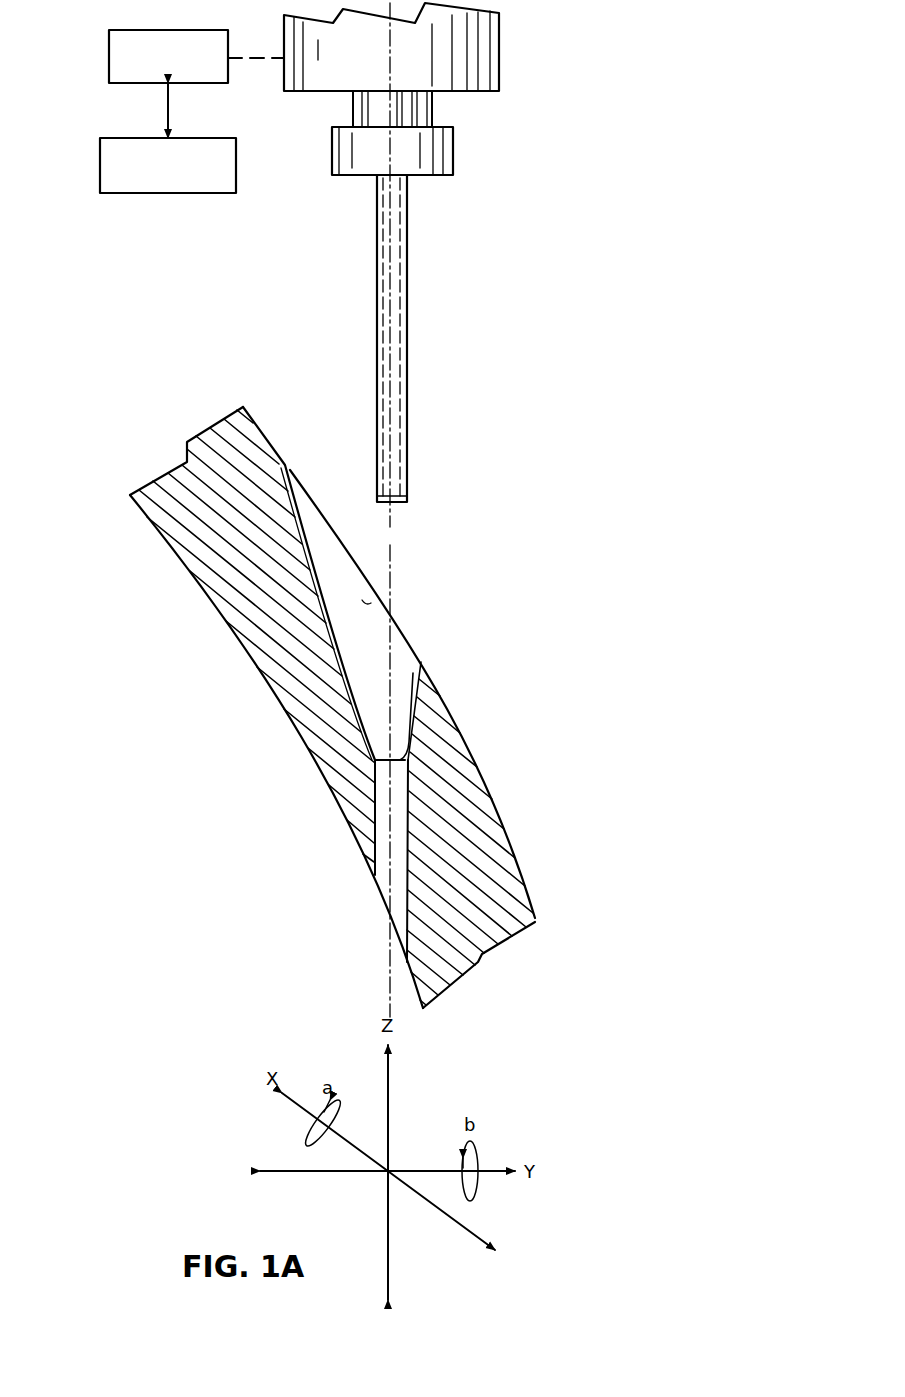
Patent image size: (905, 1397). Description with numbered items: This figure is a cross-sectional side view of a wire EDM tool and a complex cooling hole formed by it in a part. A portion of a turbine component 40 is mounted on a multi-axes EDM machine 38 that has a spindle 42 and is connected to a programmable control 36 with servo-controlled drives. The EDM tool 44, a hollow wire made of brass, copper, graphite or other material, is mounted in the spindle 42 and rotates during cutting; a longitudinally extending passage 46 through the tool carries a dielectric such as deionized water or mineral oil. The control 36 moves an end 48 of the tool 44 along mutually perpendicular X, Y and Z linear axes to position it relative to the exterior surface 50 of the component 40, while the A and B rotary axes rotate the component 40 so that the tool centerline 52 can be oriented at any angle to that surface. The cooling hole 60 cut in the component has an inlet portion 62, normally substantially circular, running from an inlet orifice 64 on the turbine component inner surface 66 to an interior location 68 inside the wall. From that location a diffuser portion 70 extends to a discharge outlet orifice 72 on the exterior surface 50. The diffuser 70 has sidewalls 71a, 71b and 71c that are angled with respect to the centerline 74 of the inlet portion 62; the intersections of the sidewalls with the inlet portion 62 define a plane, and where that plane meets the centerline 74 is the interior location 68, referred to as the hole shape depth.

The programmable control 36 is at (100, 160).
The multi-axes EDM machine 38 is at (109, 50).
The turbine component 40 is at (271, 433).
The spindle 42 is at (499, 60).
The EDM wire tool 44 is at (376, 243).
The longitudinally extending passage 46 is at (385, 305).
The end of the tool 48 is at (407, 502).
The exterior surface 50 is at (492, 805).
The tool centerline 52 is at (391, 72).
The cooling hole 60 is at (401, 648).
The inlet portion 62 is at (384, 833).
The inlet orifice 64 is at (382, 888).
The turbine component inner surface 66 is at (226, 622).
The interior location 68 is at (403, 747).
The diffuser portion 70 is at (410, 668).
The sidewall 71a is at (299, 497).
The sidewall 71b is at (371, 603).
The sidewall 71c is at (407, 690).
The discharge outlet orifice 72 is at (334, 523).
The centerline of the inlet portion 74 is at (388, 965).